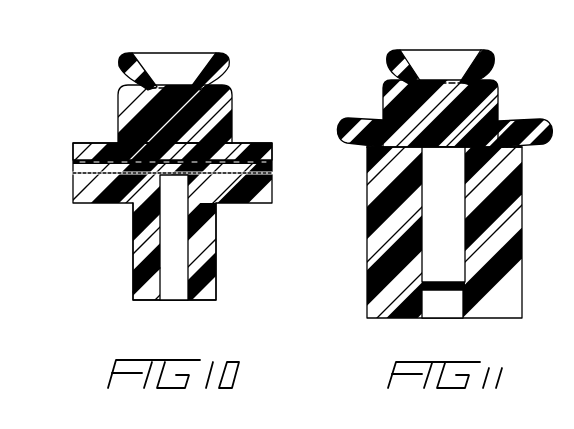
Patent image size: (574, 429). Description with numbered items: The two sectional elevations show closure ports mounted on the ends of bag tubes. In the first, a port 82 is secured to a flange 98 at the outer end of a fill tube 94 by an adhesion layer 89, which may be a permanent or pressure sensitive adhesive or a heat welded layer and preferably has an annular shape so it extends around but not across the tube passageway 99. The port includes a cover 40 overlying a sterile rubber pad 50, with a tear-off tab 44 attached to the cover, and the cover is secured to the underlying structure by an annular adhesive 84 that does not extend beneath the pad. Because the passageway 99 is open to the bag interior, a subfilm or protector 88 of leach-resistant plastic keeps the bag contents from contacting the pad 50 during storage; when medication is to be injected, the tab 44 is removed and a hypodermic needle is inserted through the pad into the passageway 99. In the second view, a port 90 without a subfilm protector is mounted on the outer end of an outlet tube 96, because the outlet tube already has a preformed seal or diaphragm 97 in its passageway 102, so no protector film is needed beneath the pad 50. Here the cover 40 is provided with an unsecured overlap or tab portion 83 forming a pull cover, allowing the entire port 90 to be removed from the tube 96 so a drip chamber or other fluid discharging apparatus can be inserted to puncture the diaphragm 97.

In FIG. 10, the cover 40 is at (234, 119).
In FIG. 11, the cover 40 is at (495, 106).
In FIG. 10, the tear-off tab 44 is at (158, 66).
In FIG. 11, the tear-off tab 44 is at (449, 54).
In FIG. 11, the sterile rubber pad 50 is at (478, 130).
In FIG. 10, the port 82 is at (288, 42).
In FIG. 11, the unsecured overlap or tab portion 83 is at (362, 148).
In FIG. 10, the adhesive 84 is at (272, 158).
In FIG. 10, the subfilm or protector 88 is at (73, 163).
In FIG. 10, the adhesion layer 89 is at (272, 168).
In FIG. 11, the adhesion layer 89 is at (522, 150).
In FIG. 11, the port 90 is at (358, 88).
In FIG. 10, the fill tube 94 is at (216, 252).
In FIG. 11, the outlet tube 96 is at (523, 240).
In FIG. 11, the preformed seal or diaphragm 97 is at (444, 292).
In FIG. 10, the flange 98 is at (98, 203).
In FIG. 10, the tube passageway 99 is at (135, 278).
In FIG. 11, the passageway 102 is at (437, 212).